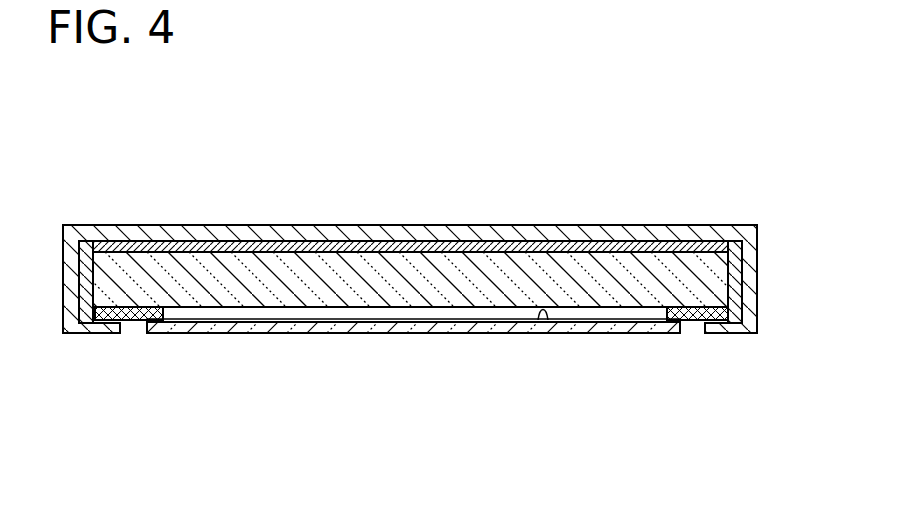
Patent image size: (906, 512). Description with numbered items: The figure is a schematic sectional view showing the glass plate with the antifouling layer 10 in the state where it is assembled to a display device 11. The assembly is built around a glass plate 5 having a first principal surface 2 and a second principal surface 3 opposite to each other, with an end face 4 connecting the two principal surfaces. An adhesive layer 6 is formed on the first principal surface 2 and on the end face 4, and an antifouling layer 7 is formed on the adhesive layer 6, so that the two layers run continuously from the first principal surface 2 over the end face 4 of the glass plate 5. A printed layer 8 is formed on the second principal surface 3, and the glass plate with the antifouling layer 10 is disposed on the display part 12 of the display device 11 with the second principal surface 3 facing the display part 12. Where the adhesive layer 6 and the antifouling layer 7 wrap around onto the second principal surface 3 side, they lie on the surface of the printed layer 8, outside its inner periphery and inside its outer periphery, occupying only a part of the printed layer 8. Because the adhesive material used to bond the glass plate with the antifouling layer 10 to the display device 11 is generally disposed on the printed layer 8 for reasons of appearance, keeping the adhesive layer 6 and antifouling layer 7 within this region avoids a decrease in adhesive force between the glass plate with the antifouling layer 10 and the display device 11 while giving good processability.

The glass plate with antifouling layer 10 is at (82, 197).
The antifouling layer 7 is at (630, 235).
The end face 4 is at (83, 282).
The adhesive layer 6 is at (512, 250).
The glass plate 5 is at (348, 267).
The first principal surface 2 is at (472, 252).
The printed layer 8 is at (133, 320).
The display device 11 is at (282, 322).
The second principal surface 3 is at (415, 305).
The display part 12 is at (548, 318).